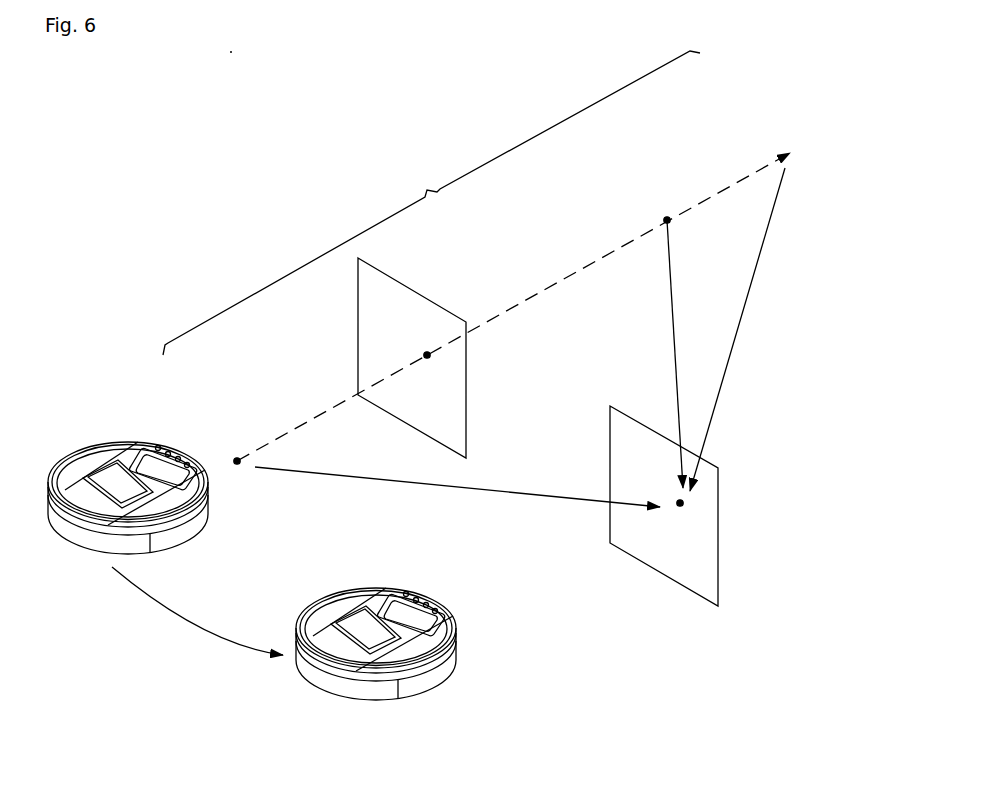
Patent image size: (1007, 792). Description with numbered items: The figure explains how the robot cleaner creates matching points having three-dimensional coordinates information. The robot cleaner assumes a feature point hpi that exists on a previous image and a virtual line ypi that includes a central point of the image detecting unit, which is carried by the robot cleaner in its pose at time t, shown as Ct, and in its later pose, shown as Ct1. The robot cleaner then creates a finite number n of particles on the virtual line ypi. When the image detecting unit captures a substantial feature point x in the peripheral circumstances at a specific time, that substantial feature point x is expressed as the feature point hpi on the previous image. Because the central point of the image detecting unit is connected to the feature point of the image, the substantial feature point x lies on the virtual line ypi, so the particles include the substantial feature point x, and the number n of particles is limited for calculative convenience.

The finite number of particles n is at (431, 203).
The feature point hpi is at (441, 374).
The substantial feature point x is at (682, 352).
The virtual line ypi is at (758, 310).
The feature point h_i in image t+1 hi is at (481, 509).
The camera/robot pose at time t Ct is at (128, 473).
The camera/robot pose at time t+1 Ct1 is at (376, 624).